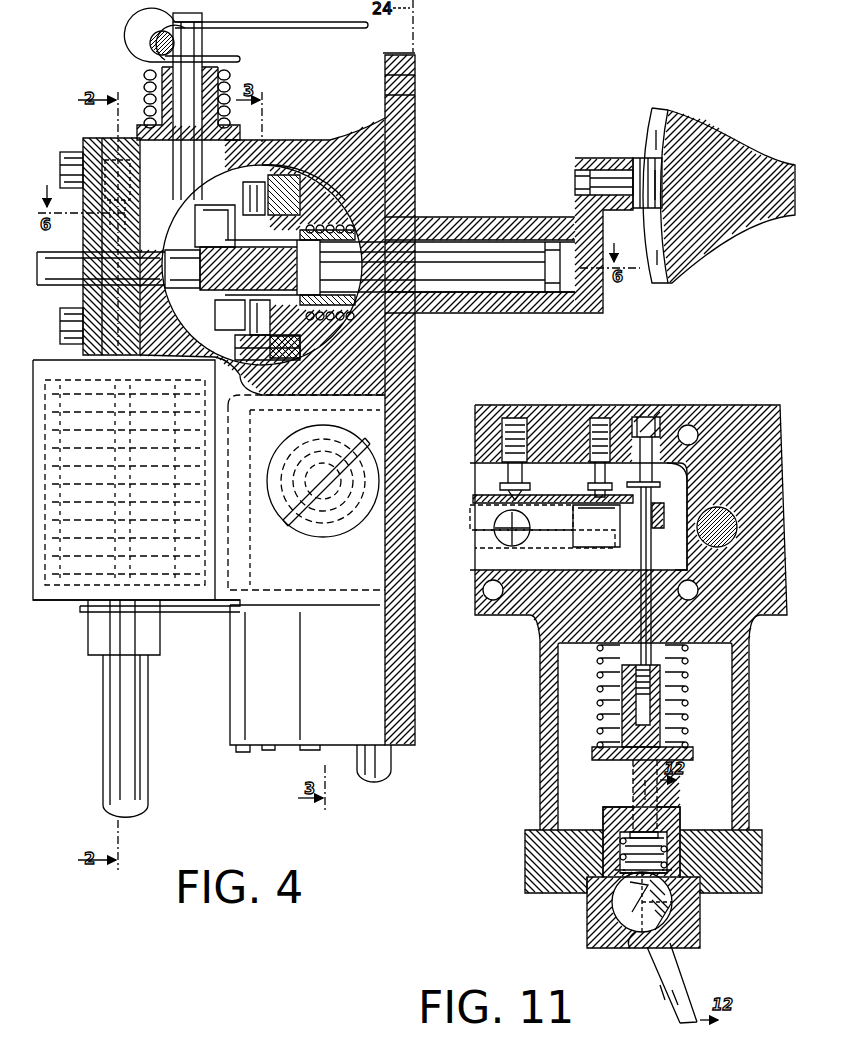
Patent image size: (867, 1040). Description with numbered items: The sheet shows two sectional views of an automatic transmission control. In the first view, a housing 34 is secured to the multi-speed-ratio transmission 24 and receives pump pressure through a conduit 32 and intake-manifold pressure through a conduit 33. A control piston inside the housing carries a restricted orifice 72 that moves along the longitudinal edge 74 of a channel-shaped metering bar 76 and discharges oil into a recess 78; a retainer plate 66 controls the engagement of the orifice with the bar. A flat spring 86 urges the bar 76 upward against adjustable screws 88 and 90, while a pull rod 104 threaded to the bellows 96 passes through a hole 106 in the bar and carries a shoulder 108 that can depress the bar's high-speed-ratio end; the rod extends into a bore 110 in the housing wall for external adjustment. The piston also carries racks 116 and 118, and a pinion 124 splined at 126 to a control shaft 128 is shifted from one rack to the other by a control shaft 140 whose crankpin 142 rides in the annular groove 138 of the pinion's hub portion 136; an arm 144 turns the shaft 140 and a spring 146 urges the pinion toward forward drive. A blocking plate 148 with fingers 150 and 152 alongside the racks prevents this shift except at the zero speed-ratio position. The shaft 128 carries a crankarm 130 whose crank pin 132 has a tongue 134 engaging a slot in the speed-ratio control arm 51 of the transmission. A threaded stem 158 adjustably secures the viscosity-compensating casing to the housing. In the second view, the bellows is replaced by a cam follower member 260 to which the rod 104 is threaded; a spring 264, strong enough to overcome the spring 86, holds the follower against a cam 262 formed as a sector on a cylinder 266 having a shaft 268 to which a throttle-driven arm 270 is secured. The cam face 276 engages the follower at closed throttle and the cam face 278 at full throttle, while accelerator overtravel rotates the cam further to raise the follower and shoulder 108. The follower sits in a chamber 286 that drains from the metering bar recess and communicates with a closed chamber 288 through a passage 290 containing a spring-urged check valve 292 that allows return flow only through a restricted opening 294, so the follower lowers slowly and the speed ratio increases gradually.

In FIG. 4, the transmission 24 is at (399, 399).
In FIG. 4, the conduit 32 is at (385, 770).
In FIG. 4, the conduit 33 is at (140, 738).
In FIG. 4, the housing 34 is at (335, 142).
In FIG. 4, the speed-ratio control arm 51 is at (735, 160).
In FIG. 11, the retainer plate 66 is at (522, 617).
In FIG. 11, the restricted orifice 72 is at (530, 535).
In FIG. 11, the longitudinal edge 74 is at (616, 545).
In FIG. 11, the metering bar 76 is at (552, 500).
In FIG. 11, the recess 78 is at (690, 492).
In FIG. 11, the flat spring 86 is at (476, 538).
In FIG. 11, the adjustable screw 88 is at (505, 465).
In FIG. 11, the adjustable screw 90 is at (597, 468).
In FIG. 4, the bellows 96 is at (172, 585).
In FIG. 11, the pull rod 104 is at (640, 610).
In FIG. 11, the hole 106 is at (654, 520).
In FIG. 11, the shoulder 108 is at (686, 468).
In FIG. 11, the bore 110 is at (650, 410).
In FIG. 4, the rack 116 is at (240, 350).
In FIG. 4, the rack 118 is at (300, 185).
In FIG. 4, the pinion 124 is at (300, 328).
In FIG. 4, the spline 126 is at (305, 280).
In FIG. 4, the control shaft 128 is at (490, 245).
In FIG. 11, the control shaft 128 is at (737, 527).
In FIG. 4, the crankarm 130 is at (590, 228).
In FIG. 4, the crank pin 132 is at (600, 178).
In FIG. 4, the tongue 134 is at (645, 172).
In FIG. 4, the hub portion 136 is at (260, 320).
In FIG. 4, the annular groove 138 is at (232, 327).
In FIG. 4, the control shaft 140 is at (205, 46).
In FIG. 4, the crankpin 142 is at (232, 225).
In FIG. 4, the handle or arm 144 is at (290, 22).
In FIG. 4, the spring 146 is at (342, 222).
In FIG. 4, the blocking plate 148 is at (252, 208).
In FIG. 4, the finger 150 is at (272, 180).
In FIG. 4, the finger 152 is at (280, 365).
In FIG. 4, the threaded stem 158 is at (350, 535).
In FIG. 11, the cam follower member 260 is at (612, 806).
In FIG. 11, the cam 262 is at (672, 905).
In FIG. 11, the spring 264 is at (680, 690).
In FIG. 11, the cylinder 266 is at (628, 912).
In FIG. 11, the shaft 268 is at (597, 935).
In FIG. 11, the arm 270 is at (685, 968).
In FIG. 11, the cam face 276 is at (632, 945).
In FIG. 11, the cam face 278 is at (625, 888).
In FIG. 11, the chamber 286 is at (735, 722).
In FIG. 11, the closed chamber 288 is at (688, 916).
In FIG. 11, the passage 290 is at (655, 800).
In FIG. 11, the check valve 292 is at (682, 818).
In FIG. 11, the restricted opening 294 is at (628, 832).